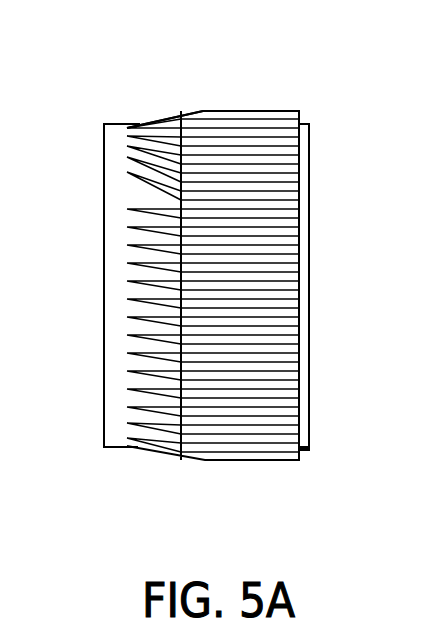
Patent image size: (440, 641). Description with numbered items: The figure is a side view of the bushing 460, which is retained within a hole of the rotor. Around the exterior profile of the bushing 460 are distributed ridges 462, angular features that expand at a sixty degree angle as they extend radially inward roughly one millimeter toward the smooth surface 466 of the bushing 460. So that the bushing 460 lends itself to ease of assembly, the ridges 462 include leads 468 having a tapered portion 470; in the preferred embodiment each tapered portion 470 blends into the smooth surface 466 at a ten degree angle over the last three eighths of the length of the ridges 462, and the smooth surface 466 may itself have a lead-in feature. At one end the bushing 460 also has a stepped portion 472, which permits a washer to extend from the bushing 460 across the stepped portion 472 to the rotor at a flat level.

The bushing 460 is at (190, 291).
The ridges 462 is at (193, 285).
The smooth surface 466 is at (111, 117).
The leads 468 is at (136, 492).
The tapered portion 470 is at (156, 108).
The stepped portion 472 is at (309, 464).